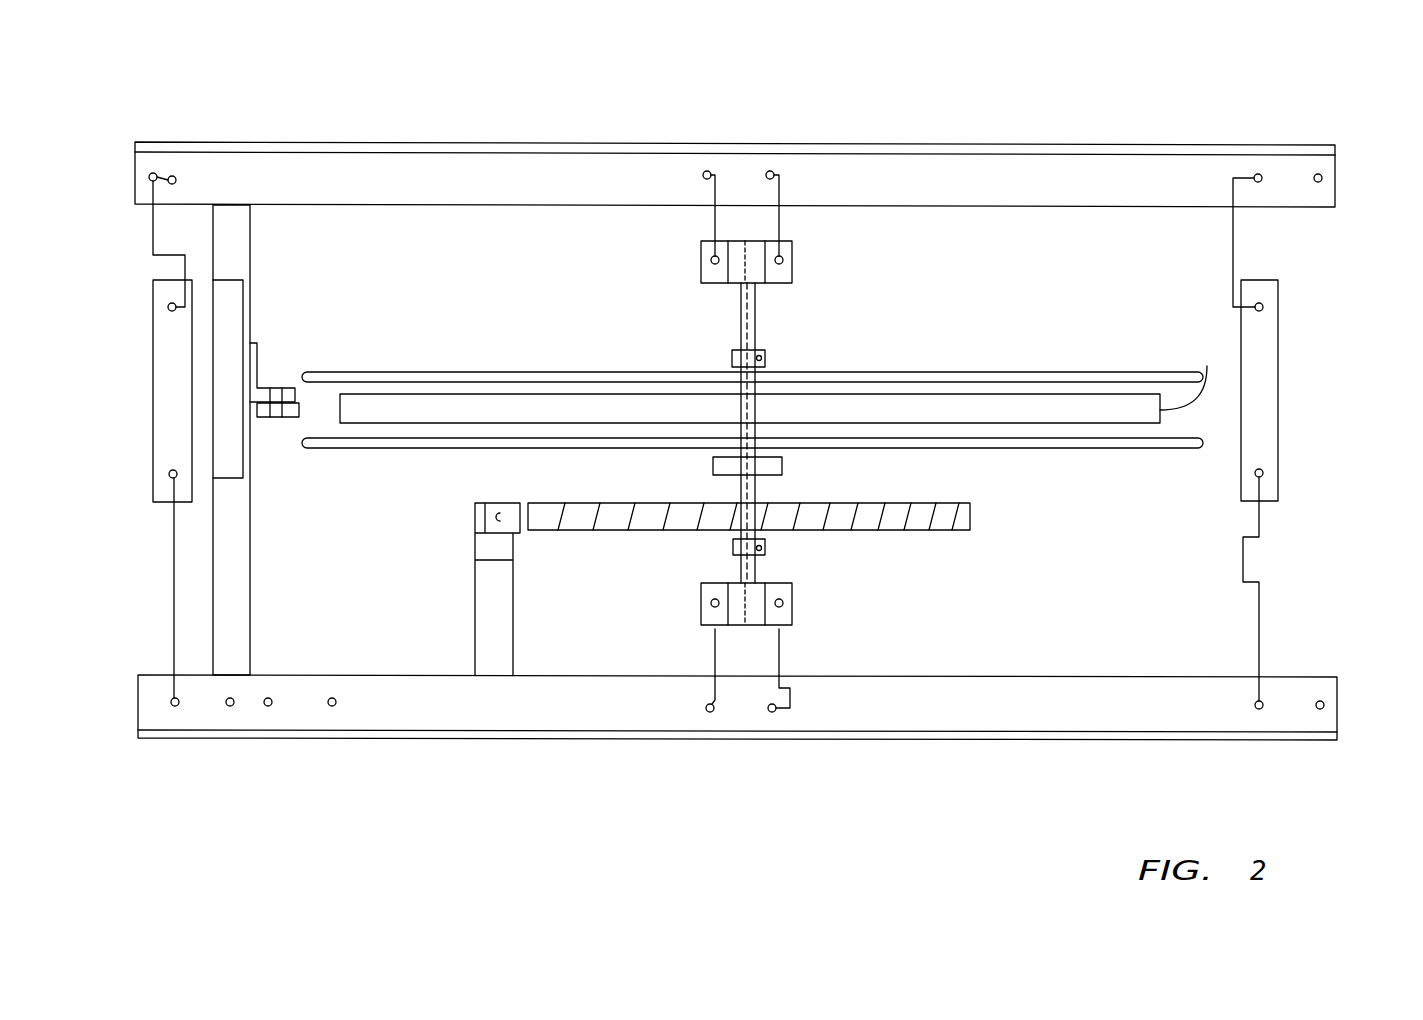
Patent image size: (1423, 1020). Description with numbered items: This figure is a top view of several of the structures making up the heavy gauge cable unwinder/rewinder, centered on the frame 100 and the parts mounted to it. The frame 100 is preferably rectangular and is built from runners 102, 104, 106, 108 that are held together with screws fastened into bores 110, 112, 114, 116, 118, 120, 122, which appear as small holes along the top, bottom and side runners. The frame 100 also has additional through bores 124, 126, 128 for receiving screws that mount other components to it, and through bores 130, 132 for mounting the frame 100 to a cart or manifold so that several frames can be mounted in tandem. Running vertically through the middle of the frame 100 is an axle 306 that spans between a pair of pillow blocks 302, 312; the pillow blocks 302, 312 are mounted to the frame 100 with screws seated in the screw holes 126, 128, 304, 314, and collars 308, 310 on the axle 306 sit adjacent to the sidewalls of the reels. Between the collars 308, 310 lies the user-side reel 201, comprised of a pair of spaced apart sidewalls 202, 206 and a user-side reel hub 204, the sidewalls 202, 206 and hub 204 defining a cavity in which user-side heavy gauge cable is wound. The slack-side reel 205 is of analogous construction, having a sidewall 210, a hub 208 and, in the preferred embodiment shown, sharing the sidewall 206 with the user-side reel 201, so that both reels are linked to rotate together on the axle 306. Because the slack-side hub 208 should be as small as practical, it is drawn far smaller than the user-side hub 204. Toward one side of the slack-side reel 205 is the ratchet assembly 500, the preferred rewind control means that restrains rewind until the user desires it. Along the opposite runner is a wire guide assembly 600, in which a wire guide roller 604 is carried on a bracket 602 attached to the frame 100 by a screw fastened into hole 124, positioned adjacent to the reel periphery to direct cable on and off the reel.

The frame 100 is at (483, 122).
The runner 102 is at (1114, 124).
The runner 104 is at (957, 757).
The runner 106 is at (1296, 398).
The runner 108 is at (148, 412).
The bore 110 is at (1258, 173).
The bore 112 is at (1278, 305).
The bore 114 is at (1259, 709).
The bore 116 is at (1263, 473).
The bore 118 is at (153, 172).
The bore 120 is at (168, 305).
The bore 122 is at (171, 700).
The through bore 124 is at (169, 474).
The through bore 126 is at (707, 171).
The through bore 128 is at (333, 708).
The through bore 130 is at (1322, 178).
The through bore 132 is at (1324, 705).
The user-side reel 201 is at (1048, 372).
The sidewall 202 is at (1117, 355).
The user-side reel hub 204 is at (1207, 366).
The slack-side reel 205 is at (988, 490).
The sidewall 206 is at (1150, 456).
The hub 208 is at (708, 466).
The sidewall 210 is at (975, 516).
The pillow block 302 is at (800, 262).
The screw hole 304 is at (715, 265).
The axle 306 is at (757, 337).
The collar 308 is at (768, 358).
The collar 310 is at (763, 549).
The pillow block 312 is at (795, 605).
The screw holes 314 is at (776, 601).
The ratchet assembly 500 is at (478, 512).
The wire guide assembly 600 is at (268, 274).
The bracket 602 is at (233, 300).
The wire guide roller 604 is at (282, 440).